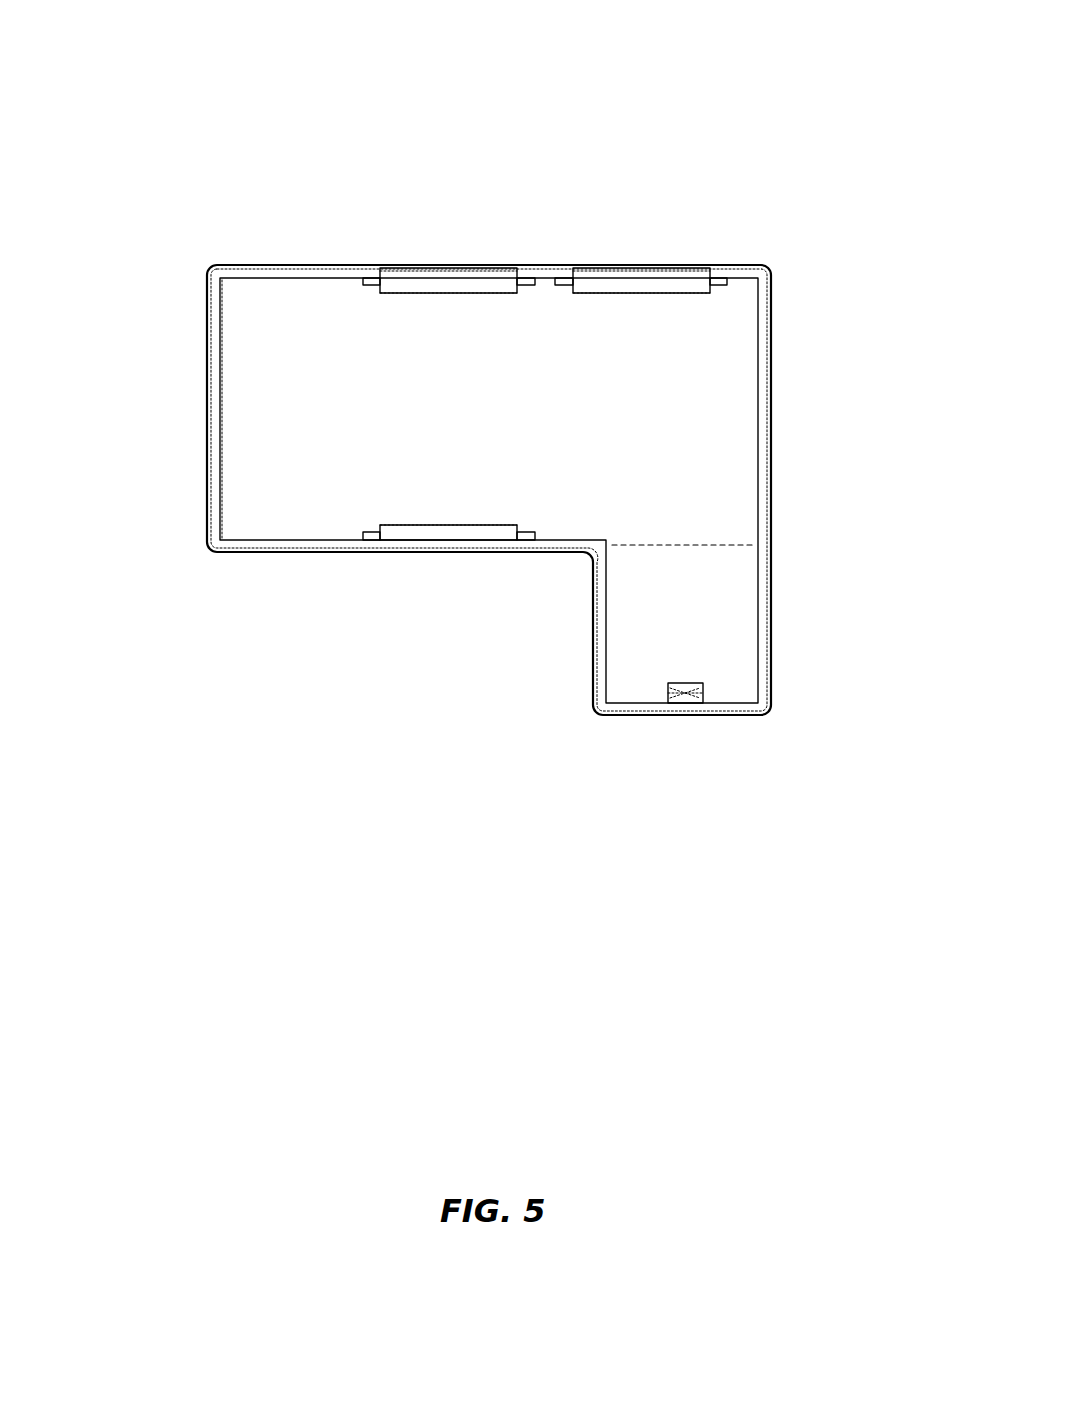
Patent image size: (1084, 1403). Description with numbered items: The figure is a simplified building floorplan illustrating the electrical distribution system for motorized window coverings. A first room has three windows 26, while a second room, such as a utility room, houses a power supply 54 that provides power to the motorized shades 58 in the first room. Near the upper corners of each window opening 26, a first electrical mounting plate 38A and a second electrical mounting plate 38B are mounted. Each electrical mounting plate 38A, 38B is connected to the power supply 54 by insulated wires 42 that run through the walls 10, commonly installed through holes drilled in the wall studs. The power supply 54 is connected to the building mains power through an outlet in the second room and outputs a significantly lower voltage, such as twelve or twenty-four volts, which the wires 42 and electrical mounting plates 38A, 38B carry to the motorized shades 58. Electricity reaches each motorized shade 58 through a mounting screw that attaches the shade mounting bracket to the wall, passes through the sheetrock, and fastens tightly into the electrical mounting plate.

The walls 10 is at (238, 273).
The windows 26 is at (418, 255).
The first electrical mounting plate 38A is at (365, 275).
The second electrical mounting plate 38B is at (520, 280).
The wires 42 is at (763, 407).
The power supply 54 is at (688, 697).
The motorized shades 58 is at (470, 285).